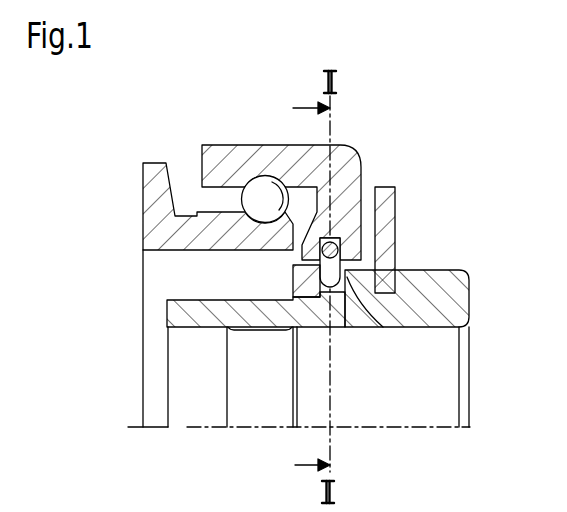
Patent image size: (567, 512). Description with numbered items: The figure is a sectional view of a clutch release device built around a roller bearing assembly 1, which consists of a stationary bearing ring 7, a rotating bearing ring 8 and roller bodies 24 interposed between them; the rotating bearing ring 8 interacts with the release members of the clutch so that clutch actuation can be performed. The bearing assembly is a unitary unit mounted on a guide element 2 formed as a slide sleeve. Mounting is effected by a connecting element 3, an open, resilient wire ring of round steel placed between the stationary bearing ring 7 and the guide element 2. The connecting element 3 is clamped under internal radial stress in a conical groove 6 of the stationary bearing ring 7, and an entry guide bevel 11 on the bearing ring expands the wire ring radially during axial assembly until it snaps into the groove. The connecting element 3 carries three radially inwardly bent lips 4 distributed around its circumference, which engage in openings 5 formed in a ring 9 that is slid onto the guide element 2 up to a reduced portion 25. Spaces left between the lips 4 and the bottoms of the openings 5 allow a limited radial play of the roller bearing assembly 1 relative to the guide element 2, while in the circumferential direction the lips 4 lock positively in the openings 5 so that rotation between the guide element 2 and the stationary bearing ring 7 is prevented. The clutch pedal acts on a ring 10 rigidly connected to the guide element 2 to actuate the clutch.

The roller bearing assembly 1 is at (142, 121).
The guide element 2 is at (444, 302).
The connecting element 3 is at (312, 271).
The lips 4 is at (346, 300).
The openings 5 is at (312, 273).
The conical groove 6 is at (384, 228).
The stationary bearing ring 7 is at (342, 172).
The rotating bearing ring 8 is at (166, 226).
The ring 9 is at (305, 286).
The ring 10 is at (383, 253).
The entry guide bevel 11 is at (305, 180).
The roller bodies 24 is at (259, 192).
The reduced portion 25 is at (380, 298).